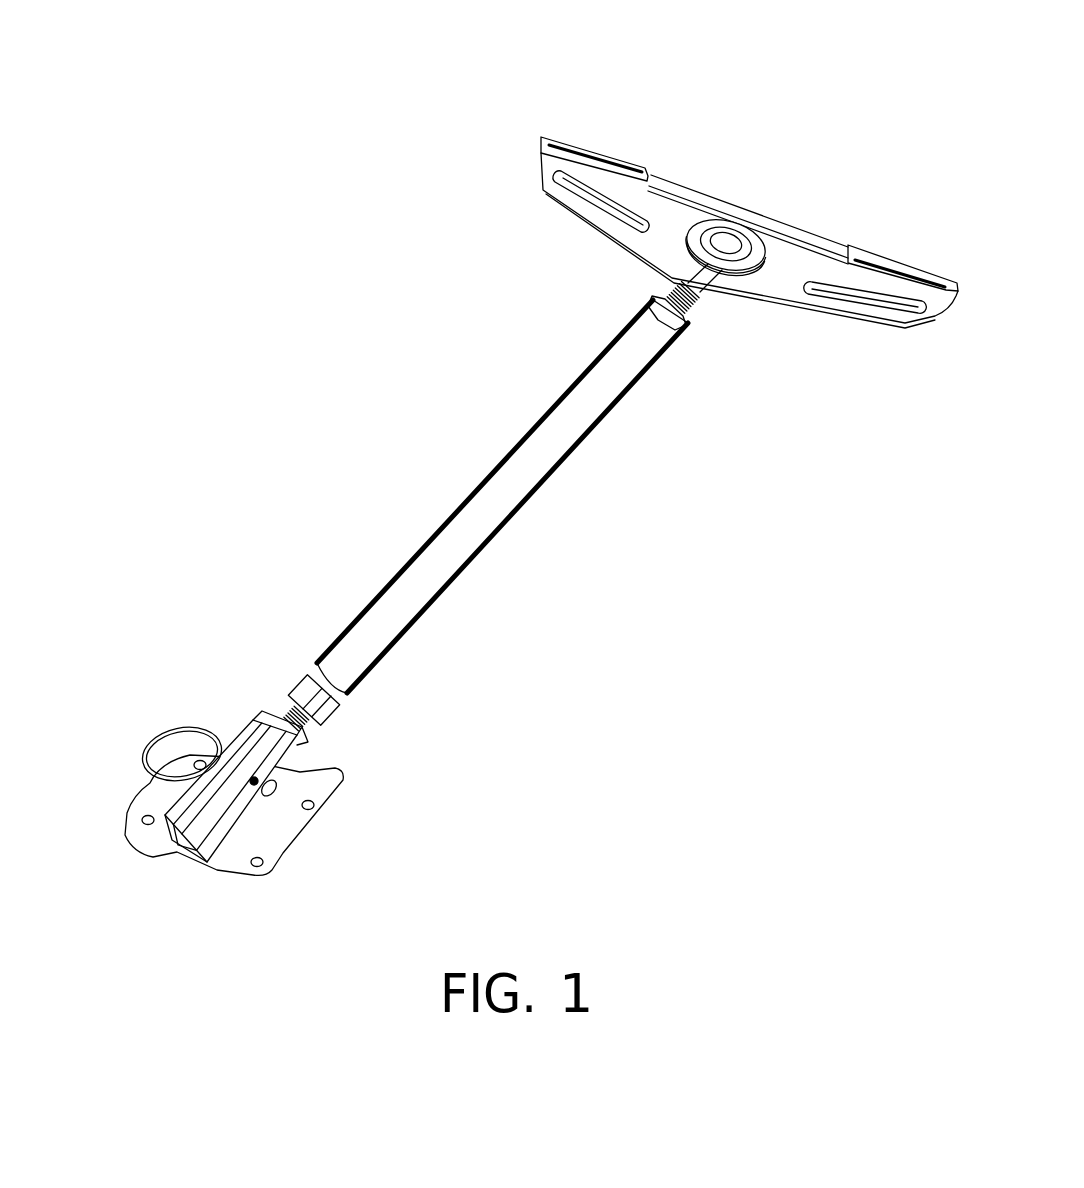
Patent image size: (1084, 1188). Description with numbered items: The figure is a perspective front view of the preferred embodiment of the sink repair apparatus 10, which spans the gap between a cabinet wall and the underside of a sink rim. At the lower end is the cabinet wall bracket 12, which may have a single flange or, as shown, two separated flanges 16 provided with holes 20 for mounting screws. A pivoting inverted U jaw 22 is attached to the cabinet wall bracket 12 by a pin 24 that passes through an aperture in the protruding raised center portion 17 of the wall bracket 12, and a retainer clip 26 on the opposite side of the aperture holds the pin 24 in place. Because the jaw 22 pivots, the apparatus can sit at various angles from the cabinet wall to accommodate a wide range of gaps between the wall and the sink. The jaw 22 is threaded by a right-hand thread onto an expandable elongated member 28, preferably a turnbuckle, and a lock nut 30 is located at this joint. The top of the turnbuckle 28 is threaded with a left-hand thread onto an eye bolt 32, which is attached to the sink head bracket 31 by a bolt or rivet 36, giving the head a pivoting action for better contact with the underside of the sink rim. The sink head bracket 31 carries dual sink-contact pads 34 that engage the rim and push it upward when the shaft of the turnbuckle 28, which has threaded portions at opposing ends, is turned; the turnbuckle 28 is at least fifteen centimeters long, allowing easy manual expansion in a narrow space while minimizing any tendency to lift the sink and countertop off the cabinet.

The sink repair apparatus 10 is at (274, 253).
The cabinet wall bracket 12 is at (130, 905).
The flanges 16 is at (290, 832).
The protruding raised center portion 17 is at (173, 847).
The holes 20 is at (317, 793).
The pivoting inverted U jaw 22 is at (305, 735).
The pin 24 is at (257, 782).
The retainer clip 26 is at (177, 725).
The expandable elongated member 28 is at (480, 495).
The lock nut 30 is at (288, 693).
The sink head bracket 31 is at (592, 258).
The eye bolt 32 is at (707, 288).
The sink-contact pads 34 is at (885, 247).
The bolt or rivet 36 is at (746, 225).